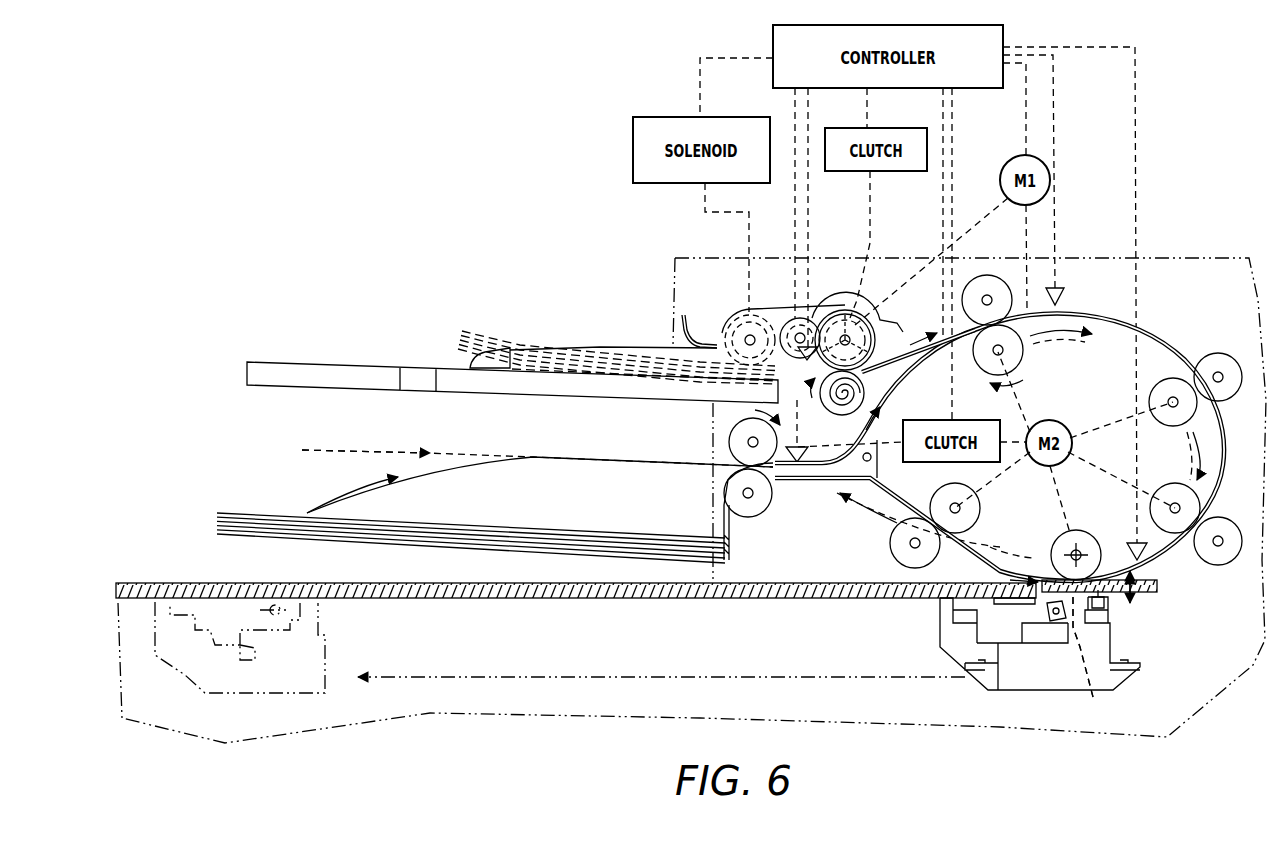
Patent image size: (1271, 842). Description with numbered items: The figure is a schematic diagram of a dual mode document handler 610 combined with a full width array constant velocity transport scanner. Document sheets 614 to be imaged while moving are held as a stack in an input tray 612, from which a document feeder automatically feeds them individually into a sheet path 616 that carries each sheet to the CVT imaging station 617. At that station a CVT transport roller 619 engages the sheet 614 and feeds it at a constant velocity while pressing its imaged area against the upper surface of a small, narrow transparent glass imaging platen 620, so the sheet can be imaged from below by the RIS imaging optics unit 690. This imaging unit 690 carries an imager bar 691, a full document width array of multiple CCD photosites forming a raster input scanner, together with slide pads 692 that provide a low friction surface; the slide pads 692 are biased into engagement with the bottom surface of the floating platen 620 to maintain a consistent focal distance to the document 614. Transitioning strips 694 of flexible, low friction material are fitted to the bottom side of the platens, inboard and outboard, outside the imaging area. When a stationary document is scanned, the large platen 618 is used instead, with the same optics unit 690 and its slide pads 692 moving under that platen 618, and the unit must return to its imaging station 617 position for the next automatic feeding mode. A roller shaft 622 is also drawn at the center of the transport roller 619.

The dual mode document handler 610 is at (525, 116).
The input tray 612 is at (447, 366).
The document sheets 614 is at (462, 334).
The sheet path 616 is at (1214, 462).
The CVT imaging station 617 is at (1079, 525).
The large platen 618 is at (880, 598).
The CVT transport roller 619 is at (1056, 547).
The transparent glass imaging platen 620 is at (1159, 590).
The roller shaft 622 is at (1098, 539).
The RIS imaging optics unit 690 is at (1140, 668).
The imager bar 691 is at (1092, 659).
The slide pads 692 is at (1100, 599).
The transitioning strips 694 is at (1035, 600).